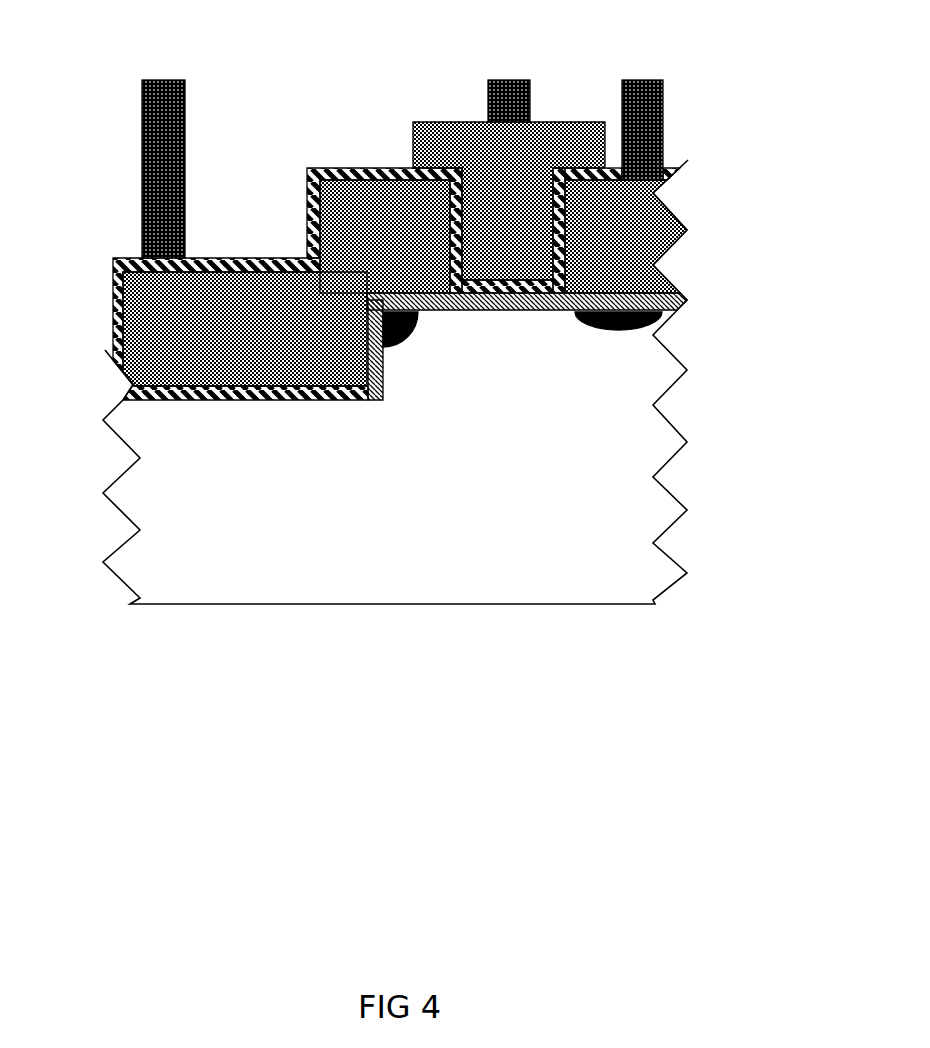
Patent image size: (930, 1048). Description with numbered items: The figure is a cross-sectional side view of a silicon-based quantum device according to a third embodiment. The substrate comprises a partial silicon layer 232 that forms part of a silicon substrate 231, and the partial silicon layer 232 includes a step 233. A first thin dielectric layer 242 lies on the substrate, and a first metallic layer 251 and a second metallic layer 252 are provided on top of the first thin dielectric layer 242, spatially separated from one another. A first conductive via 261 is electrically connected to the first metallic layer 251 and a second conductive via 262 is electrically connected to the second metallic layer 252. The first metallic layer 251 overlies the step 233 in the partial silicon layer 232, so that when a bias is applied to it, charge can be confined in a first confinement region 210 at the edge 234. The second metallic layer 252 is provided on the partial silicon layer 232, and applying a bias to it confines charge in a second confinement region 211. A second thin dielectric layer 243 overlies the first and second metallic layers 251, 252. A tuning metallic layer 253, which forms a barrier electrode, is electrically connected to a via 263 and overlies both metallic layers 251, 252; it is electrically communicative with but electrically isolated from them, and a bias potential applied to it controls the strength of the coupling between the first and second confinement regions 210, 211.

The first confinement region 210 is at (395, 338).
The second confinement region 211 is at (603, 330).
The silicon substrate 231 is at (605, 515).
The partial silicon layer 232 is at (655, 365).
The step 233 is at (378, 372).
The edge 234 is at (377, 305).
The first thin dielectric layer 242 is at (655, 303).
The second thin dielectric layer 243 is at (352, 178).
The first metallic layer 251 is at (152, 318).
The second metallic layer 252 is at (620, 230).
The tuning metallic layer 253 is at (537, 150).
The first conductive via 261 is at (170, 140).
The second conductive via 262 is at (648, 110).
The via 263 is at (512, 98).